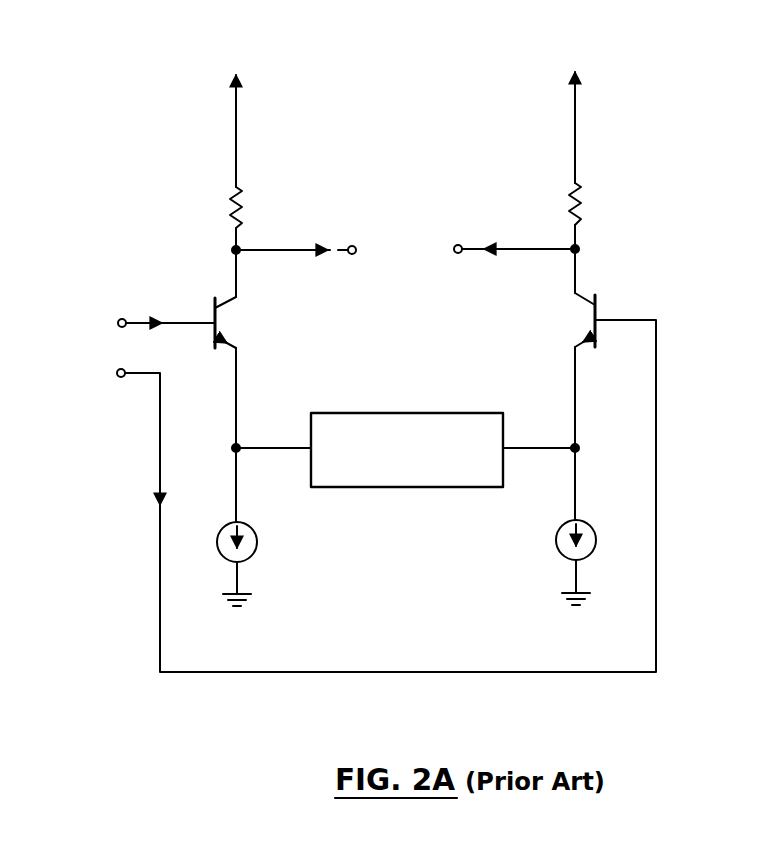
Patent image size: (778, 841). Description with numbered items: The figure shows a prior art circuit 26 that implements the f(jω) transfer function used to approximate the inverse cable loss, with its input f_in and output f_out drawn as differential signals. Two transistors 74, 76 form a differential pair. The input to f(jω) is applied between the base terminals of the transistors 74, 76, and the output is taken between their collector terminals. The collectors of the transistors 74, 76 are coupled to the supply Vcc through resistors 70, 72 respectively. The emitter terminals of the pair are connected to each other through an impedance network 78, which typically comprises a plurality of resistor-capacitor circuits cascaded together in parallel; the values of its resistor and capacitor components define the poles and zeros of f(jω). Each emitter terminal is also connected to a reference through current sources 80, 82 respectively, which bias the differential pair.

The prior art differential amplifier circuit 26 is at (116, 100).
The resistor 70 is at (242, 213).
The resistor 72 is at (568, 206).
The transistor 74 is at (247, 320).
The transistor 76 is at (563, 319).
The impedance network 78 is at (398, 412).
The current source 80 is at (256, 553).
The current source 82 is at (557, 551).